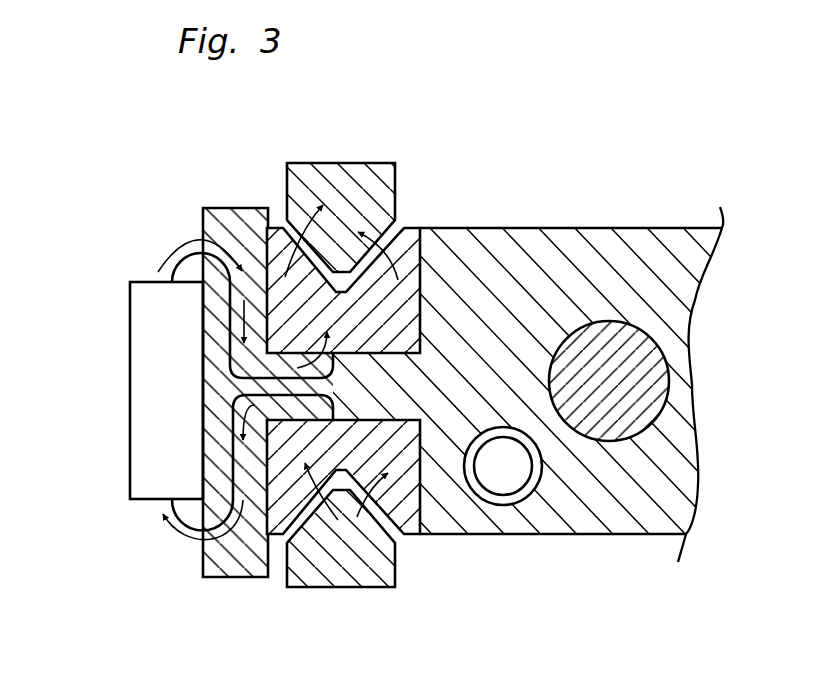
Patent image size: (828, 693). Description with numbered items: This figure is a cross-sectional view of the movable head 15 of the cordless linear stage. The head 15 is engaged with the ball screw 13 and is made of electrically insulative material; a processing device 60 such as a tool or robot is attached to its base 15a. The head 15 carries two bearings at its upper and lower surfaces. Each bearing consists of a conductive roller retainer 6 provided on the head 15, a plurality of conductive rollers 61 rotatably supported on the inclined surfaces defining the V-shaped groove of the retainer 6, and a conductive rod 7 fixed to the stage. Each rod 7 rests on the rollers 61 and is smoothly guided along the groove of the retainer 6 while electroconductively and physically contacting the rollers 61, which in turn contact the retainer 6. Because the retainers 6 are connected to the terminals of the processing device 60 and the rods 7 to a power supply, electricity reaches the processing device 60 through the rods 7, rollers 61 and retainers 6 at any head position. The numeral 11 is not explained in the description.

The conductive roller retainer 6 is at (412, 284).
The conductive rod 7 is at (347, 185).
The conductive roller 61 is at (293, 238).
The bore 11 is at (512, 480).
The ball screw 13 is at (622, 382).
The movable head 15 is at (541, 224).
The base 15a is at (215, 220).
The processing device 60 is at (142, 373).